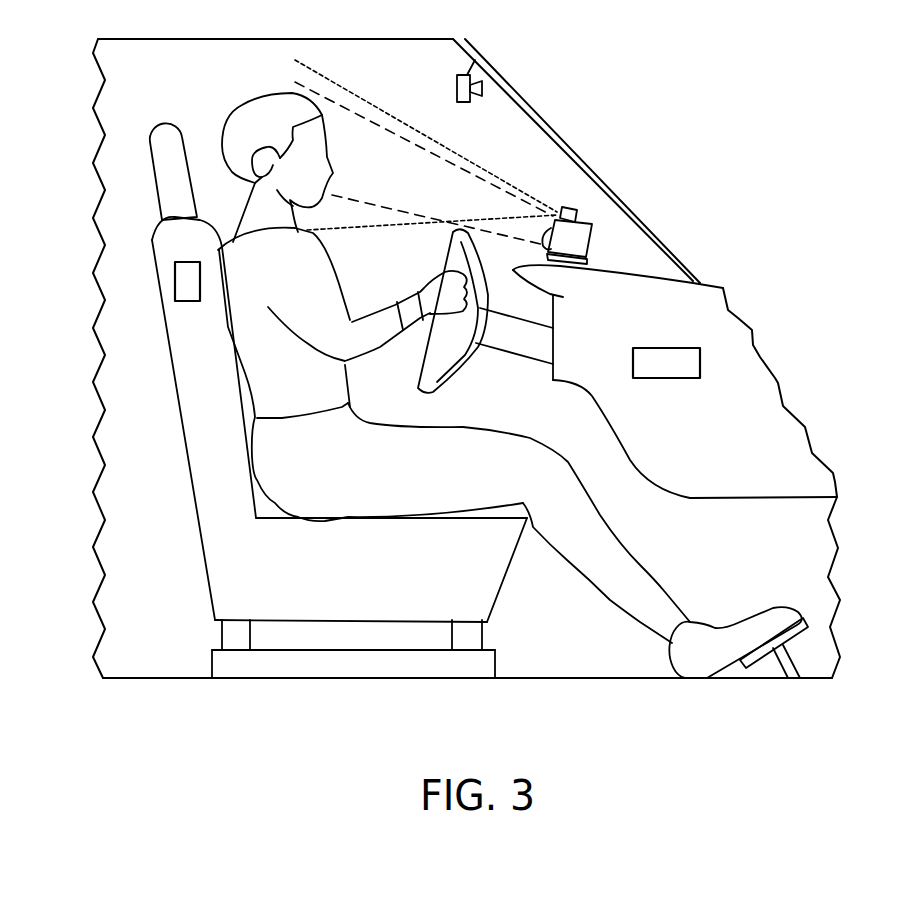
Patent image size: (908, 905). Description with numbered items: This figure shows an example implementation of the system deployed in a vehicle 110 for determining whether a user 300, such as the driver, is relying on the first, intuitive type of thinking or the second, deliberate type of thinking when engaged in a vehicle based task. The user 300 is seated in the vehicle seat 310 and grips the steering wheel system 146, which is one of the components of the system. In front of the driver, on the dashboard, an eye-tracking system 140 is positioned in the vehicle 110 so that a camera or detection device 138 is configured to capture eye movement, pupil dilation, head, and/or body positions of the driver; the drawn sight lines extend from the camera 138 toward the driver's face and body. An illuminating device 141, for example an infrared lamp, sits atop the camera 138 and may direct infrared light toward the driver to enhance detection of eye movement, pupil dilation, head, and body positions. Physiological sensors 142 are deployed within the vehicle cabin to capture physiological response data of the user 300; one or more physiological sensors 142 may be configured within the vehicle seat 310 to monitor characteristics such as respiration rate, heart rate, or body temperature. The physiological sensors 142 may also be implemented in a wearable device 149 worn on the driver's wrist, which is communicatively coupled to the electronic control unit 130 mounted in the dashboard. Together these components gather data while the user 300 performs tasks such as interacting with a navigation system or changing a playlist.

The vehicle 110 is at (486, 358).
The electronic control unit 130 is at (667, 378).
The camera 138 is at (592, 243).
The eye-tracking system 140 is at (519, 158).
The illuminating device 141 is at (578, 213).
The physiological sensors 142 is at (189, 302).
The steering wheel system 146 is at (462, 355).
The wearable device 149 is at (403, 302).
The user 300 is at (243, 118).
The vehicle seat 310 is at (207, 597).